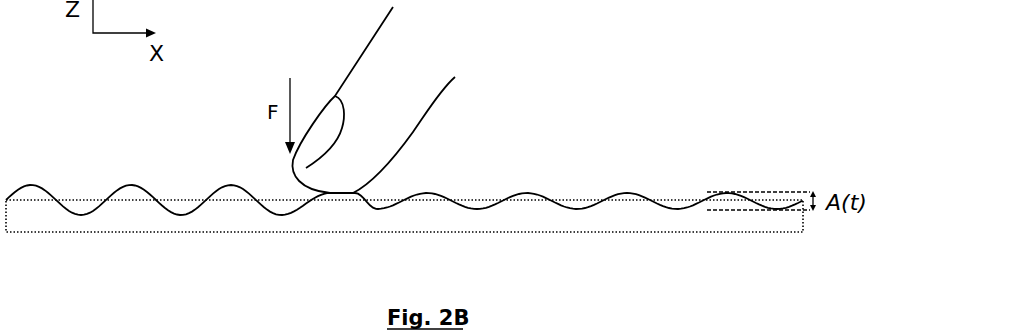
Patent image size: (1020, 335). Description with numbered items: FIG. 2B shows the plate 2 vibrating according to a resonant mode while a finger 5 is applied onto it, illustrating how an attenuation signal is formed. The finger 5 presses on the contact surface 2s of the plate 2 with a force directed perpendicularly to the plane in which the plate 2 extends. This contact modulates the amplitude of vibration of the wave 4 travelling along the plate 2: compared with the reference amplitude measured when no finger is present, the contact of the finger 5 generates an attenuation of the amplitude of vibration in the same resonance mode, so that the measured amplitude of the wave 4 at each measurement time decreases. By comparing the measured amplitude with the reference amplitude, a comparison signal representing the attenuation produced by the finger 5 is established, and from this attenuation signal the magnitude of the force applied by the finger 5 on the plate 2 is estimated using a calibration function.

The plate 2 is at (612, 220).
The contact surface 2s is at (146, 180).
The wave 4 is at (456, 192).
The finger 5 is at (393, 61).